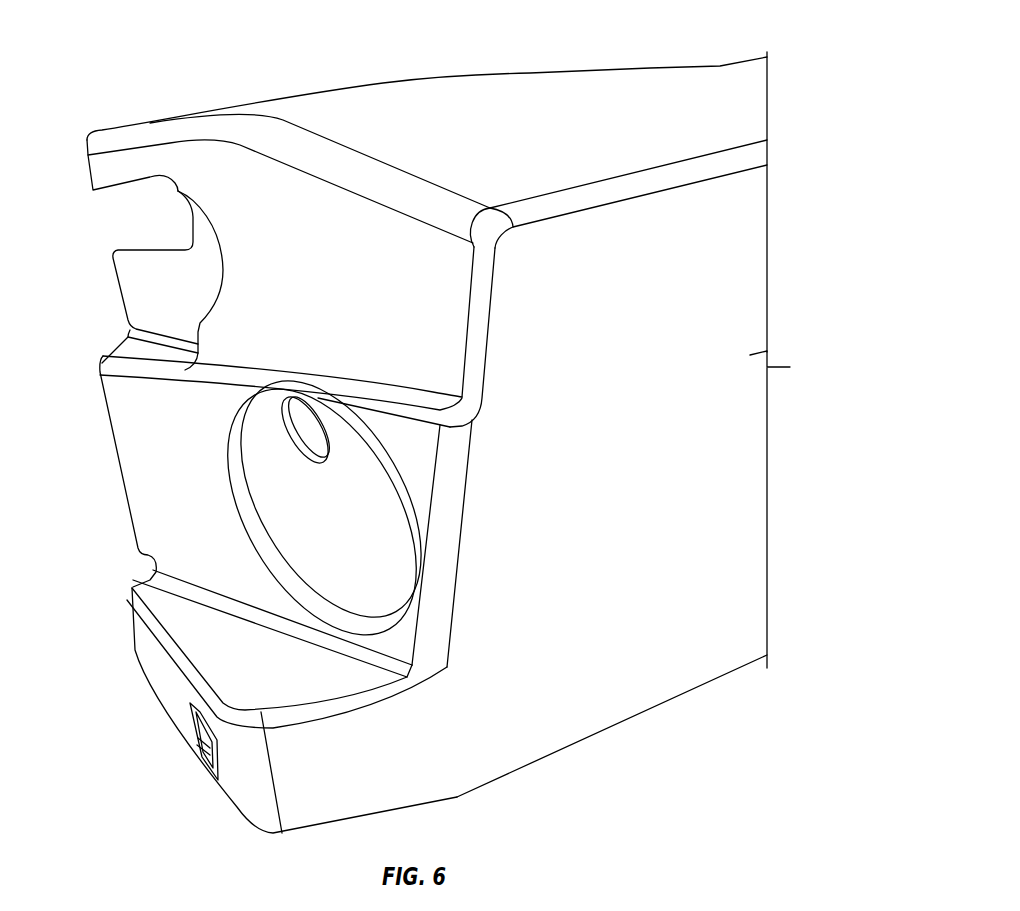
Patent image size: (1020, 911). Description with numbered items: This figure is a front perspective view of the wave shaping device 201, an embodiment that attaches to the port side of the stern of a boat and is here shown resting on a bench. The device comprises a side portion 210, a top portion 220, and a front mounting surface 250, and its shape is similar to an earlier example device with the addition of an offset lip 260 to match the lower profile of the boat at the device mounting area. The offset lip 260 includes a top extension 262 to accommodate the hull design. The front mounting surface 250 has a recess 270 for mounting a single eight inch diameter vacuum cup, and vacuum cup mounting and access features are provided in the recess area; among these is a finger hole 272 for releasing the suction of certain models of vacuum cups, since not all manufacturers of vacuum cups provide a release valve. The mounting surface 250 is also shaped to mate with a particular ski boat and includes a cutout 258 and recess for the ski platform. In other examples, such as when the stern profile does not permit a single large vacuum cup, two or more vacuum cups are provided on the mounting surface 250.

The top portion 220 is at (627, 97).
The cutout 258 is at (146, 215).
The wave shaping device 201 is at (752, 272).
The front mounting surface 250 is at (308, 337).
The finger hole 272 is at (302, 432).
The recess 270 is at (317, 510).
The top extension 262 is at (238, 657).
The offset lip 260 is at (212, 738).
The side portion 210 is at (713, 507).